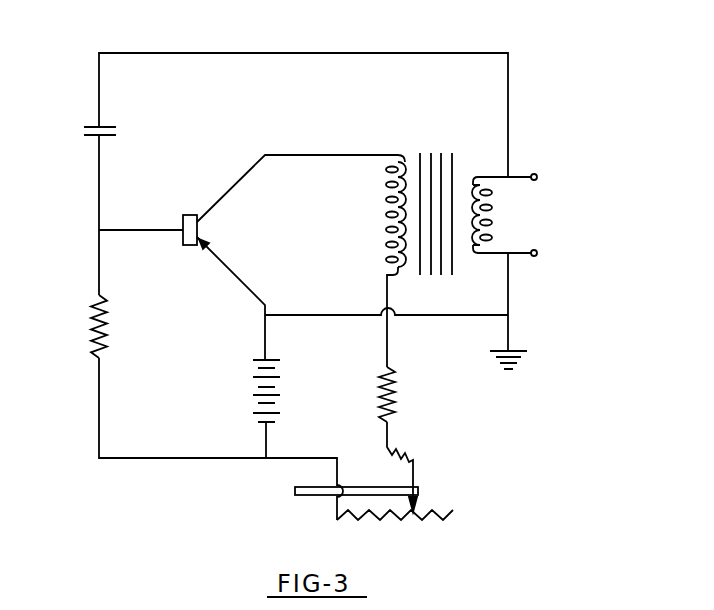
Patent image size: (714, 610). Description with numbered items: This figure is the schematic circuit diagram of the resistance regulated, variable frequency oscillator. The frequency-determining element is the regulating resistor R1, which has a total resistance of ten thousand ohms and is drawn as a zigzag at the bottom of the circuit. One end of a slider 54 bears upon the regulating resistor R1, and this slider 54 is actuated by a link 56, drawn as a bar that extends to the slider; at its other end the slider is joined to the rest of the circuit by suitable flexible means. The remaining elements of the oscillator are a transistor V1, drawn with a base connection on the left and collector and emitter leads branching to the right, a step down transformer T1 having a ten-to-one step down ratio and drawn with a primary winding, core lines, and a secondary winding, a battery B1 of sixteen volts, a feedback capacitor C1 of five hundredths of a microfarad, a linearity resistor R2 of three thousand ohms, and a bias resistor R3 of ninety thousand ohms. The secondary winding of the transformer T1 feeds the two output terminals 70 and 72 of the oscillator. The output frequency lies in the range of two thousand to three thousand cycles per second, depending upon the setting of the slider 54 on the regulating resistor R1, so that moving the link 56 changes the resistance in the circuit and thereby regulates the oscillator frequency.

The feedback capacitor C1 is at (86, 131).
The bias resistor R3 is at (78, 326).
The transistor V1 is at (294, 235).
The battery B1 is at (251, 386).
The step down transformer T1 is at (458, 246).
The output terminal 70 is at (550, 167).
The output terminal 72 is at (550, 252).
The linearity resistor R2 is at (403, 394).
The slider 54 is at (414, 484).
The link 56 is at (296, 496).
The regulating resistor R1 is at (395, 532).